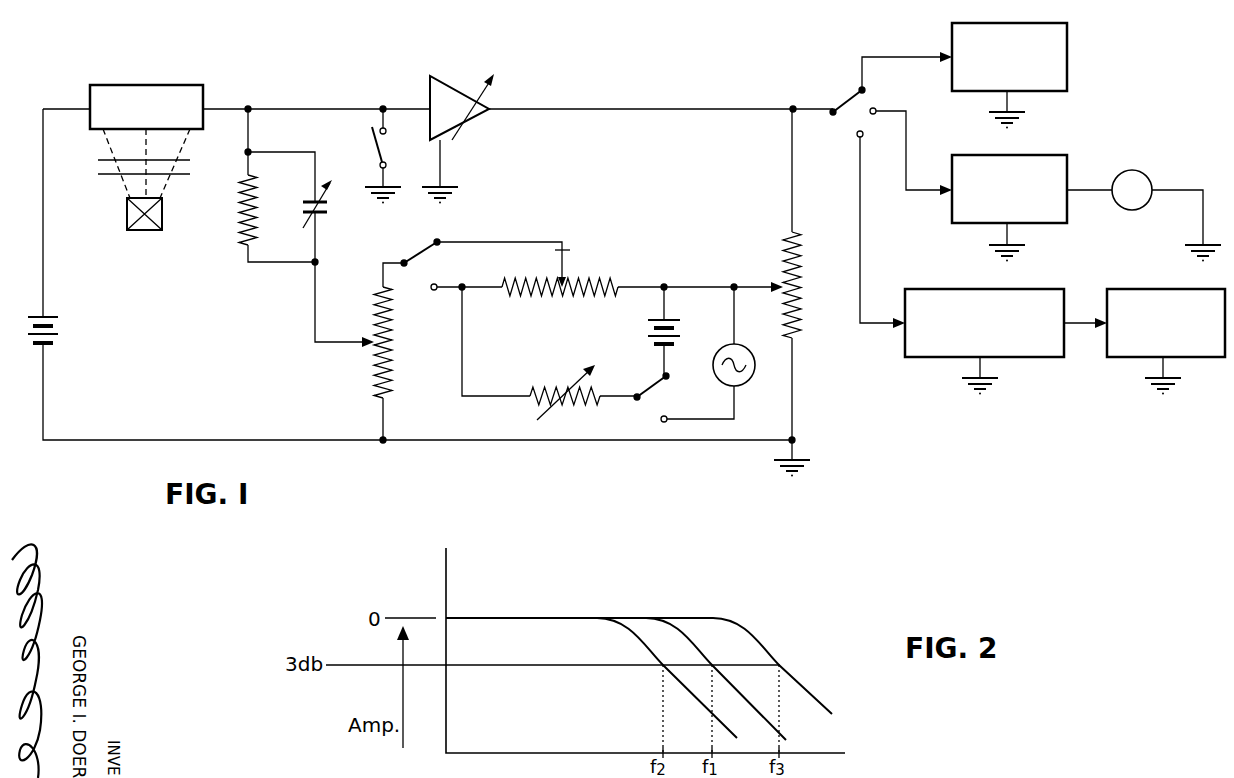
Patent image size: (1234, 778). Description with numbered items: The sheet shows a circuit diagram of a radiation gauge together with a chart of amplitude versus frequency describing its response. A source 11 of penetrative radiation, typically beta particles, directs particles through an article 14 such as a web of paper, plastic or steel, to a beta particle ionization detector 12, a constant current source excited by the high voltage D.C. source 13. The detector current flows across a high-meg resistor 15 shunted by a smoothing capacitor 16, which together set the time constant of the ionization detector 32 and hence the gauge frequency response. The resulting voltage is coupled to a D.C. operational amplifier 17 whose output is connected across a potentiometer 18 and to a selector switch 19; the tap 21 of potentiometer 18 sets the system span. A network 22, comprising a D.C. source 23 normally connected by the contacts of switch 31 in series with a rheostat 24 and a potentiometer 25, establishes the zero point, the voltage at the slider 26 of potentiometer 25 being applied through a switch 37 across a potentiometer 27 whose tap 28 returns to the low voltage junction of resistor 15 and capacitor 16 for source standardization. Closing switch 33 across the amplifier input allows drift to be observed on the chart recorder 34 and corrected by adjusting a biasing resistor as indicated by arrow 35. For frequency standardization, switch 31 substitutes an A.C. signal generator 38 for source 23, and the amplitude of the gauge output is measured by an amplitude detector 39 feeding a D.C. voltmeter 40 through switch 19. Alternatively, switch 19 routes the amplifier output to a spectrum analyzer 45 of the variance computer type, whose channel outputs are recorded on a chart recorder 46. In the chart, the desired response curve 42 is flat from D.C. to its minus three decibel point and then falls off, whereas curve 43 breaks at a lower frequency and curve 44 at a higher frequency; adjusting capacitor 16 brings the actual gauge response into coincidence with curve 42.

In FIG. 1, the source of penetrative radiation 11 is at (127, 213).
In FIG. 1, the beta particle ionization detector 12 is at (136, 85).
In FIG. 1, the D.C. source 13 is at (30, 316).
In FIG. 1, the article 14 is at (178, 176).
In FIG. 1, the high-meg resistor 15 is at (243, 230).
In FIG. 1, the capacitor 16 is at (308, 200).
In FIG. 1, the D.C. operational amplifier 17 is at (430, 92).
In FIG. 1, the potentiometer 18 is at (803, 266).
In FIG. 1, the selector switch 19 is at (848, 100).
In FIG. 1, the tap 21 is at (760, 282).
In FIG. 1, the network 22 is at (545, 340).
In FIG. 1, the D.C. source 23 is at (650, 323).
In FIG. 1, the rheostat 24 is at (555, 390).
In FIG. 1, the potentiometer 25 is at (598, 282).
In FIG. 1, the slider 26 is at (565, 248).
In FIG. 1, the potentiometer 27 is at (374, 308).
In FIG. 1, the tap 28 is at (345, 345).
In FIG. 1, the switch 31 is at (650, 394).
In FIG. 1, the ionization detector 32 is at (800, 453).
In FIG. 1, the switch 33 is at (376, 146).
In FIG. 1, the chart recorder 34 is at (1055, 50).
In FIG. 1, the arrow 35 is at (484, 99).
In FIG. 1, the switch 37 is at (419, 262).
In FIG. 1, the A.C. signal generator 38 is at (746, 380).
In FIG. 1, the amplitude detector 39 is at (1043, 166).
In FIG. 1, the D.C. voltmeter 40 is at (1138, 172).
In FIG. 2, the curve 42 is at (572, 617).
In FIG. 2, the curve 43 is at (640, 640).
In FIG. 2, the curve 44 is at (783, 662).
In FIG. 1, the spectrum analyzer 45 is at (925, 352).
In FIG. 1, the chart recorder 46 is at (1134, 289).